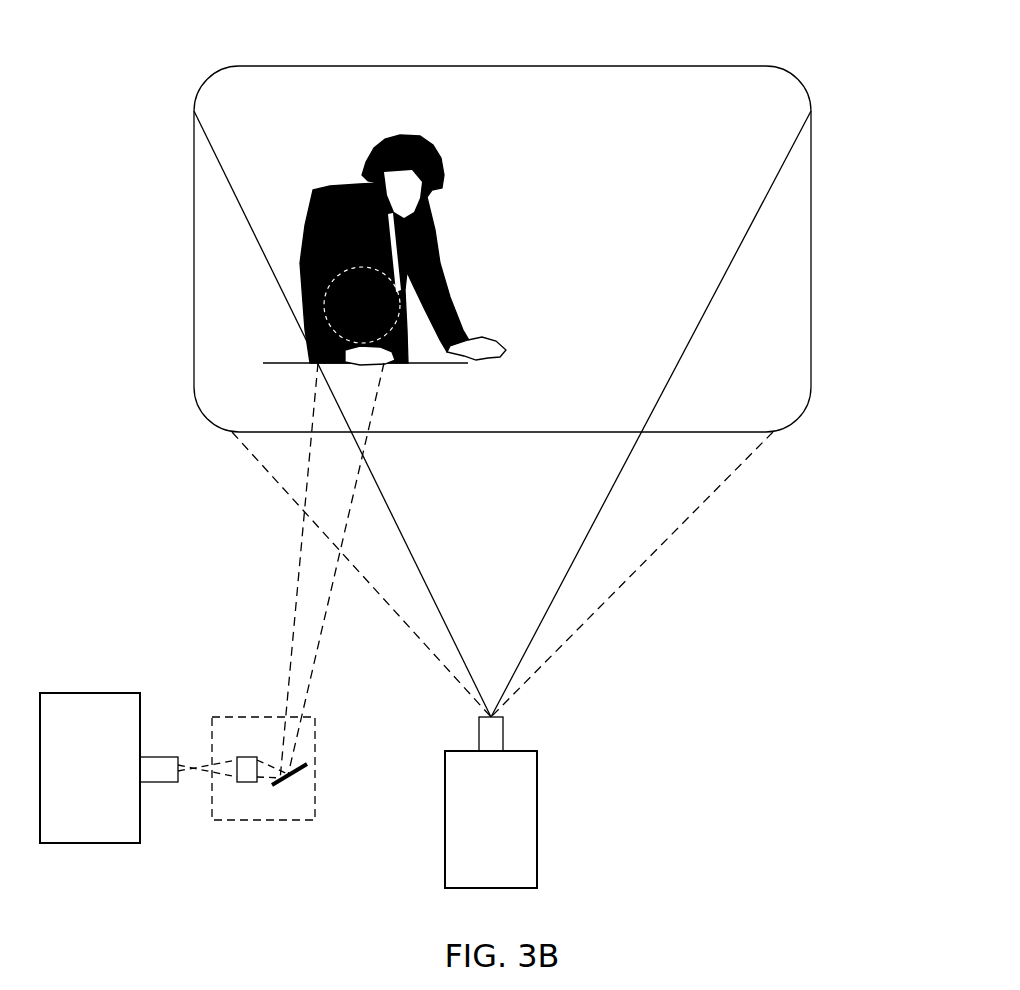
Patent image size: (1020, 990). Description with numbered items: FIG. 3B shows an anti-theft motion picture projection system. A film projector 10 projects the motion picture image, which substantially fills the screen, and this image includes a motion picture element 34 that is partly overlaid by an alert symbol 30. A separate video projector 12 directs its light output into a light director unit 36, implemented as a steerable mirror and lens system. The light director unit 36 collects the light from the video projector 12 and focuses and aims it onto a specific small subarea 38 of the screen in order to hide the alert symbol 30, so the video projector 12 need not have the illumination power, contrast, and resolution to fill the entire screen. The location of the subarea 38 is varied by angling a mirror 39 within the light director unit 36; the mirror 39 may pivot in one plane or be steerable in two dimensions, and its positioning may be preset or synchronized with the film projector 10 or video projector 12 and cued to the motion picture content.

The film projector 10 is at (537, 751).
The video projector 12 is at (140, 693).
The alert symbol 30 is at (811, 103).
The motion picture element 34 is at (433, 153).
The light director unit 36 is at (315, 717).
The subarea 38 is at (327, 329).
The mirror 39 is at (288, 779).